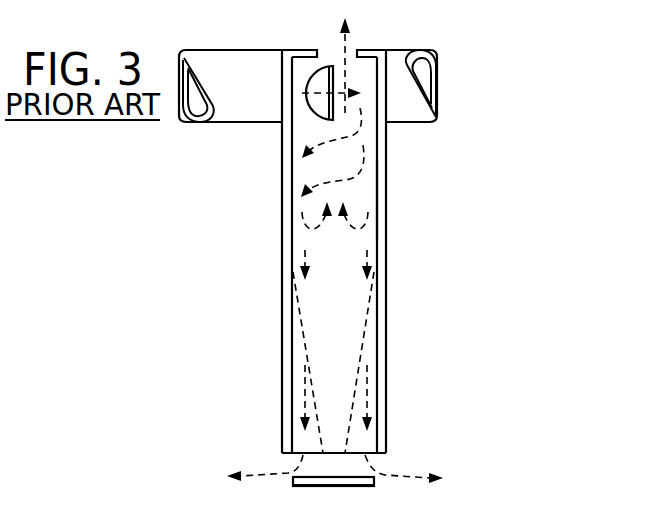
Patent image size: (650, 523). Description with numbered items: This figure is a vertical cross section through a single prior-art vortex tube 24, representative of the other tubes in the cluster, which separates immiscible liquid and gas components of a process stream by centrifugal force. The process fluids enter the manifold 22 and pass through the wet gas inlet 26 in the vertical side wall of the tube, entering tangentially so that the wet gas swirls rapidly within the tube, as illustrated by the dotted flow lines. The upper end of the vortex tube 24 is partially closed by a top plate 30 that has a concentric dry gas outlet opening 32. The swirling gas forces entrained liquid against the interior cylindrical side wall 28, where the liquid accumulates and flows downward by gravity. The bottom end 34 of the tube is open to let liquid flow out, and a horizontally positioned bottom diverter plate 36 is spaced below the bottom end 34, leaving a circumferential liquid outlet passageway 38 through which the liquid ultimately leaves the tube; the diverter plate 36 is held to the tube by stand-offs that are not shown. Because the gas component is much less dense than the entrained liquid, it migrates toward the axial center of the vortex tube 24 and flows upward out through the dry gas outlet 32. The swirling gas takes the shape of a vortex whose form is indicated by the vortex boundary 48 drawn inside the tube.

The manifold 22 is at (245, 63).
The vortex tube 24 is at (385, 257).
The inlet 26 is at (322, 100).
The interior cylindrical side wall 28 is at (377, 196).
The top plate 30 is at (366, 50).
The dry gas outlet opening 32 is at (316, 50).
The bottom end 34 is at (285, 462).
The bottom diverter plate 36 is at (378, 482).
The liquid outlet passageway 38 is at (372, 465).
The vortex boundary 48 is at (368, 352).